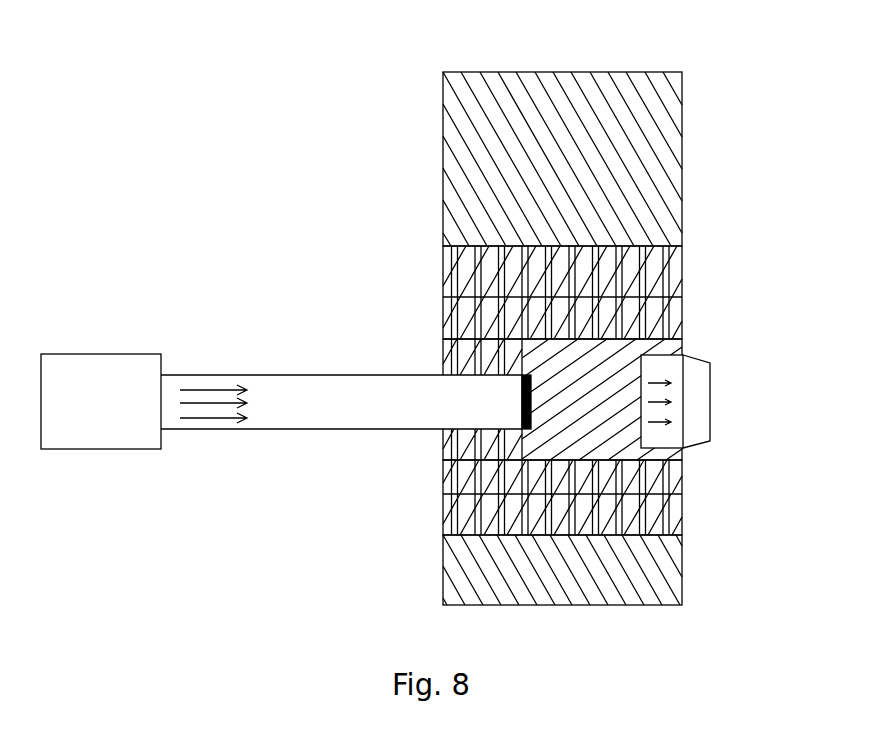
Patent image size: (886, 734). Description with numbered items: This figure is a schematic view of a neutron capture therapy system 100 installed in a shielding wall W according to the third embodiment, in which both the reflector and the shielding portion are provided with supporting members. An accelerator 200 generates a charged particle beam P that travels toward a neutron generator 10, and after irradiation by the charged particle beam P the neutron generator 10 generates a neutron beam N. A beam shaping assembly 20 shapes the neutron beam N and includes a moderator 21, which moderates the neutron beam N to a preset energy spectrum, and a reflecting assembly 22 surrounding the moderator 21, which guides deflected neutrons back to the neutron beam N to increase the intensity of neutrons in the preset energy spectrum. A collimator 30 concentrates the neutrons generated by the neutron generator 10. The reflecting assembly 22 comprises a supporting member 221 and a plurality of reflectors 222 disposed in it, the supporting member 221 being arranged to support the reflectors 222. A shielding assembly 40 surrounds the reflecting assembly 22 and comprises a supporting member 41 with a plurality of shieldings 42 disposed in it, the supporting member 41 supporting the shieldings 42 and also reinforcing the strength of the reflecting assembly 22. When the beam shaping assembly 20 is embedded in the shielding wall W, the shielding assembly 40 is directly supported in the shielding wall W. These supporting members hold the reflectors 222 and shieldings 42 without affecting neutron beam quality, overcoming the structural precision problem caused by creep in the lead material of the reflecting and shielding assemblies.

The neutron capture therapy system 100 is at (173, 90).
The shielding wall W is at (655, 160).
The reflecting assembly 22 is at (574, 292).
The supporting member 221 is at (458, 311).
The reflectors 222 is at (447, 327).
The beam shaping assembly 20 is at (583, 464).
The moderator 21 is at (668, 345).
The neutron generator 10 is at (520, 413).
The collimator 30 is at (736, 439).
The neutron beam N is at (694, 403).
The shielding assembly 40 is at (588, 552).
The supporting member 41 is at (680, 507).
The shieldings 42 is at (680, 522).
The accelerator 200 is at (78, 435).
The charged particle beam P is at (341, 402).